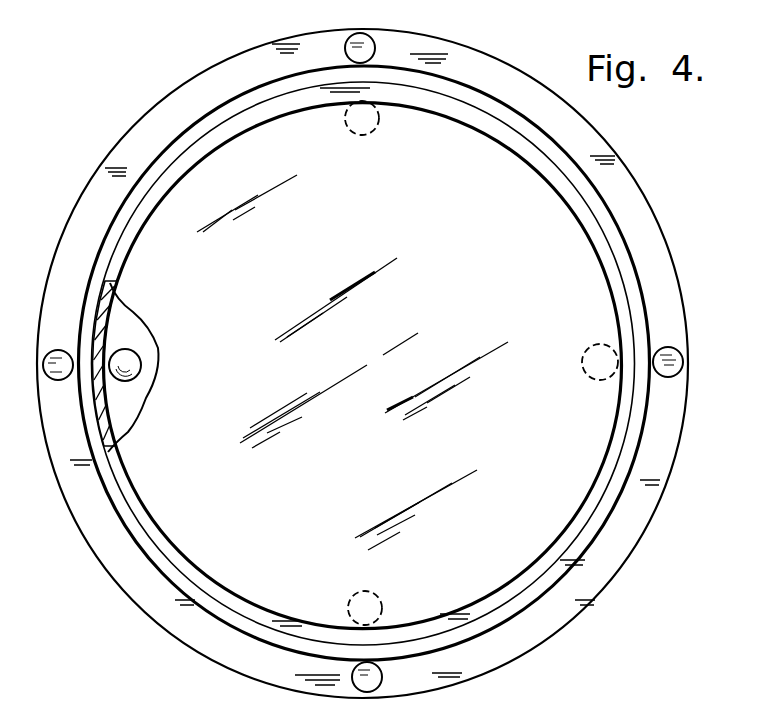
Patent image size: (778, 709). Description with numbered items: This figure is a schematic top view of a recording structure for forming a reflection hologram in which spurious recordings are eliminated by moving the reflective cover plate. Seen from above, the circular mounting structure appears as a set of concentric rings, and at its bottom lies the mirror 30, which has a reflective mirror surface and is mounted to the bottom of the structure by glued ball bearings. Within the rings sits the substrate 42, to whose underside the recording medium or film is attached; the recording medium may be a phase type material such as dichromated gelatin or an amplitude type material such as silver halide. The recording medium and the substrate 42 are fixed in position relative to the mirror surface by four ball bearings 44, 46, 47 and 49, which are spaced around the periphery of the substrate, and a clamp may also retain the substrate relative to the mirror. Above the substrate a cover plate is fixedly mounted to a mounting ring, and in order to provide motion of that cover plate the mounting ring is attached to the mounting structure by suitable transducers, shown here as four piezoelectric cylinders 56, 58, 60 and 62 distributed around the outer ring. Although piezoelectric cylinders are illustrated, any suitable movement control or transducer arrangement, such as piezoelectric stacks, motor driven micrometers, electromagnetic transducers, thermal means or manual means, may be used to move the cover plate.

The mirror 30 is at (112, 313).
The substrate 42 is at (514, 378).
The ball bearing 44 is at (141, 374).
The ball bearing 46 is at (588, 378).
The ball bearing 47 is at (382, 601).
The ball bearing 49 is at (374, 131).
The piezoelectric cylinder 56 is at (63, 379).
The piezoelectric cylinder 58 is at (382, 678).
The piezoelectric cylinder 60 is at (673, 376).
The piezoelectric cylinder 62 is at (346, 42).